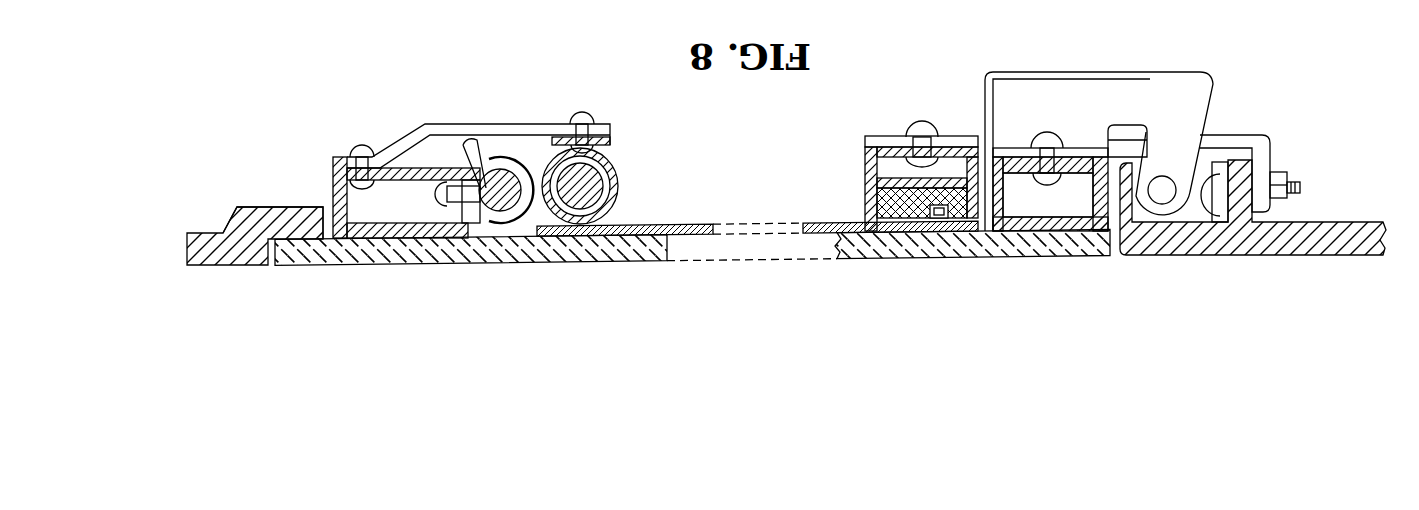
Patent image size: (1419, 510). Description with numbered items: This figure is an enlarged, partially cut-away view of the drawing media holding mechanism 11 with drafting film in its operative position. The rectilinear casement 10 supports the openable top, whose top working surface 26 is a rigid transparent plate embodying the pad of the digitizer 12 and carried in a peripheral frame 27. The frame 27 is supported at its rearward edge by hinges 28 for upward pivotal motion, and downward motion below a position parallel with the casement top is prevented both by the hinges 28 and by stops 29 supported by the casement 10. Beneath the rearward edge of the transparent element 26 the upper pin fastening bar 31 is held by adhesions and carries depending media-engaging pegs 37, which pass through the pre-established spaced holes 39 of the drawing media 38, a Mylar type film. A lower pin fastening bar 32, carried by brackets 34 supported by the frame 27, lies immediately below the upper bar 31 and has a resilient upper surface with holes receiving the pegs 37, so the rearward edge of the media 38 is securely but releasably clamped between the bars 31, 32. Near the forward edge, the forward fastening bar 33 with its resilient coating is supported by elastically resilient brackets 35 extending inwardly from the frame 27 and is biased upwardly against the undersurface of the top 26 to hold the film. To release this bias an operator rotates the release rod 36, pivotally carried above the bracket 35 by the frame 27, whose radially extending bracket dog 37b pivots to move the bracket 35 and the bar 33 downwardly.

The rectilinear casement 10 is at (247, 266).
The digitizer 12 is at (365, 267).
The stops 29 is at (280, 213).
The top working surface 26 is at (540, 260).
The peripheral frame 27 is at (388, 248).
The drawing media 38 is at (633, 225).
The release rod 36 is at (333, 181).
The brackets 35 is at (420, 132).
The drawing media holding mechanism 11 is at (338, 153).
The media-engaging pegs 37 is at (478, 207).
The bracket dog 37b is at (482, 187).
The forward fastening bar 33 is at (615, 178).
The brackets 34 is at (900, 140).
The spaced holes 39 is at (870, 181).
The lower pin fastening bar 32 is at (877, 203).
The upper pin fastening bar 31 is at (950, 232).
The hinges 28 is at (1157, 72).